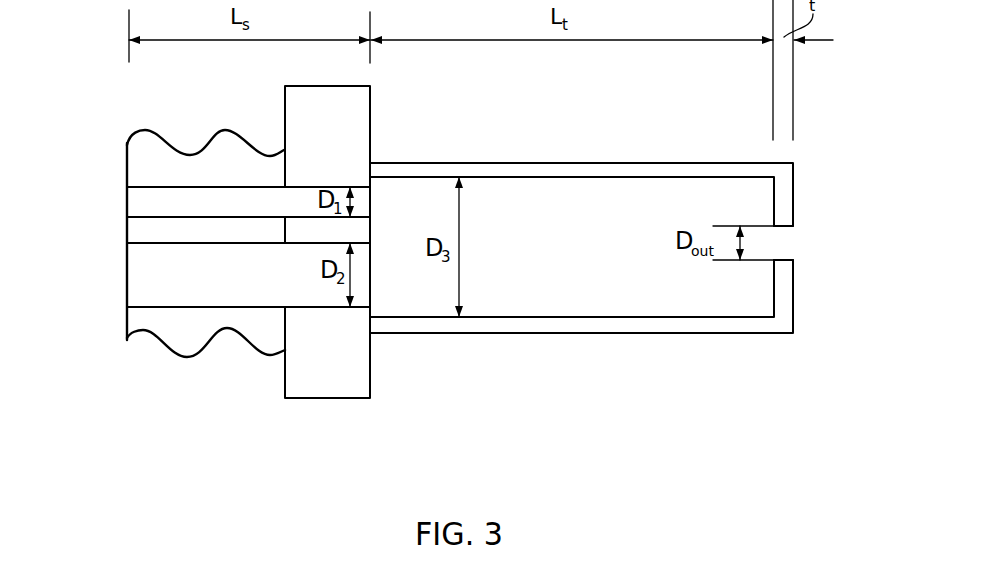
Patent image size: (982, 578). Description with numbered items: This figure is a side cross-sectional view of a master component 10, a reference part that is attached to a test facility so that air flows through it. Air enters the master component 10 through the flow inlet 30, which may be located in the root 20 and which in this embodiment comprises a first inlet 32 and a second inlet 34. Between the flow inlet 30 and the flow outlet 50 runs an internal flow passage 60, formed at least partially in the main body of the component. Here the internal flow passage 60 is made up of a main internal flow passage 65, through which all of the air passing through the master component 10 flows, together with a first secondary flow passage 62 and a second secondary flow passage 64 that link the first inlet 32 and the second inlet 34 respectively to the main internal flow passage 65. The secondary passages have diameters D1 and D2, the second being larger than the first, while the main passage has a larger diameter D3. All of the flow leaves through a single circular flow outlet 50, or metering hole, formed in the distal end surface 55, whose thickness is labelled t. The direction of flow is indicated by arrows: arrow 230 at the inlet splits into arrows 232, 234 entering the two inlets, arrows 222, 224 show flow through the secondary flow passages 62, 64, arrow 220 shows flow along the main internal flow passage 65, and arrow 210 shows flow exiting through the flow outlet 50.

The master component 10 is at (703, 383).
The root 20 is at (222, 152).
The flow inlet 30 is at (137, 394).
The first inlet 32 is at (128, 192).
The second inlet 34 is at (138, 297).
The flow outlet 50 is at (788, 227).
The distal end surface 55 is at (785, 292).
The internal flow passage 60 is at (427, 453).
The first secondary flow passage 62 is at (303, 210).
The second secondary flow passage 64 is at (260, 292).
The main internal flow passage 65 is at (487, 302).
The flow direction arrow through flow outlet 210 is at (767, 242).
The flow direction arrow through main internal flow passage 220 is at (575, 247).
The flow direction arrow through first secondary flow passage 222 is at (267, 203).
The flow direction arrow through second secondary flow passage 224 is at (267, 273).
The flow direction arrow at inlet 230 is at (80, 273).
The flow direction arrow to first inlet 232 is at (157, 202).
The flow direction arrow to second inlet 234 is at (157, 273).